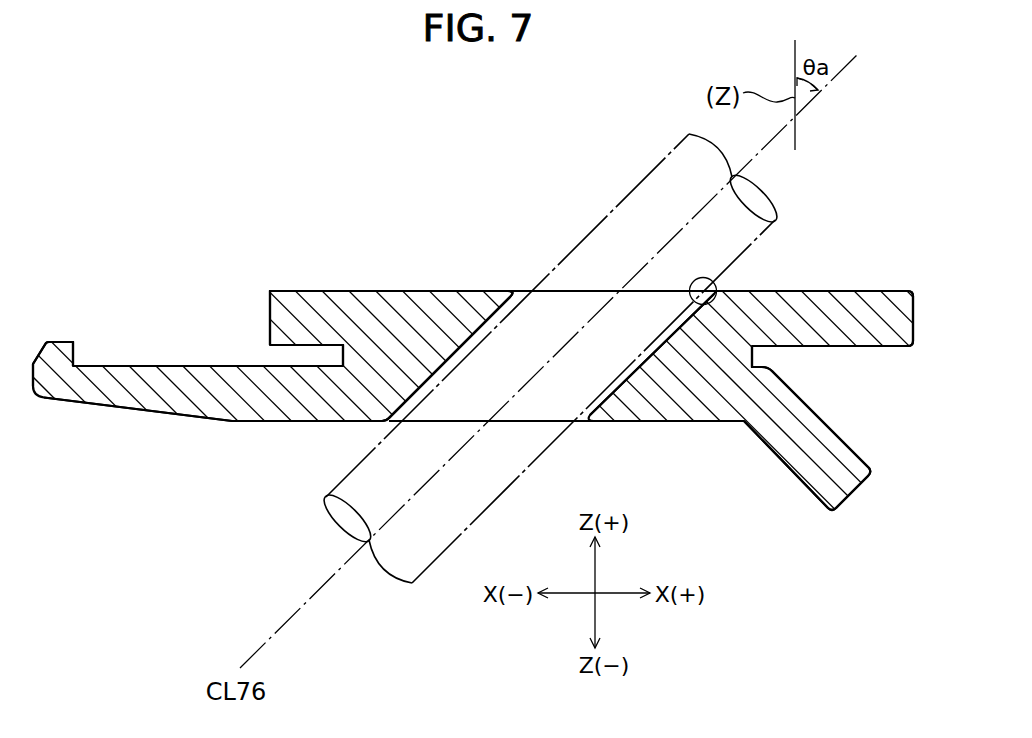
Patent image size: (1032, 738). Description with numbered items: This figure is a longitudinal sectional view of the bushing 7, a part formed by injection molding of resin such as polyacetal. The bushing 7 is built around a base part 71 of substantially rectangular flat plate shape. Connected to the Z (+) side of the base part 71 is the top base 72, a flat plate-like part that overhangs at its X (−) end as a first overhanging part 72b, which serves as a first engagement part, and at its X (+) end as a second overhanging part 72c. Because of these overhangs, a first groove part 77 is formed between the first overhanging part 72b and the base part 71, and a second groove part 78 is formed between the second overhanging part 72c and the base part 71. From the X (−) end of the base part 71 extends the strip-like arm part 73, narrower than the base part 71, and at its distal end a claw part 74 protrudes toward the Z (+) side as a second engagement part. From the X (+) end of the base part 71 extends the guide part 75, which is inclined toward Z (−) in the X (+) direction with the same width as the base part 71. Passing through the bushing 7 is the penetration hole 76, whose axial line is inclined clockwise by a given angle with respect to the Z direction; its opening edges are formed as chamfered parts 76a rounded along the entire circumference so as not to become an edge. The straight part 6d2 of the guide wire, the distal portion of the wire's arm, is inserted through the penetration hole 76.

The bushing 7 is at (818, 291).
The base part 71 is at (672, 421).
The top base 72 is at (852, 291).
The first overhanging part 72b is at (298, 291).
The second overhanging part 72c is at (893, 291).
The arm part 73 is at (137, 409).
The claw part 74 is at (58, 342).
The guide part 75 is at (865, 462).
The penetration hole 76 is at (712, 283).
The chamfered parts 76a is at (506, 291).
The first groove part 77 is at (266, 356).
The second groove part 78 is at (776, 362).
The straight part 6d2 is at (590, 232).